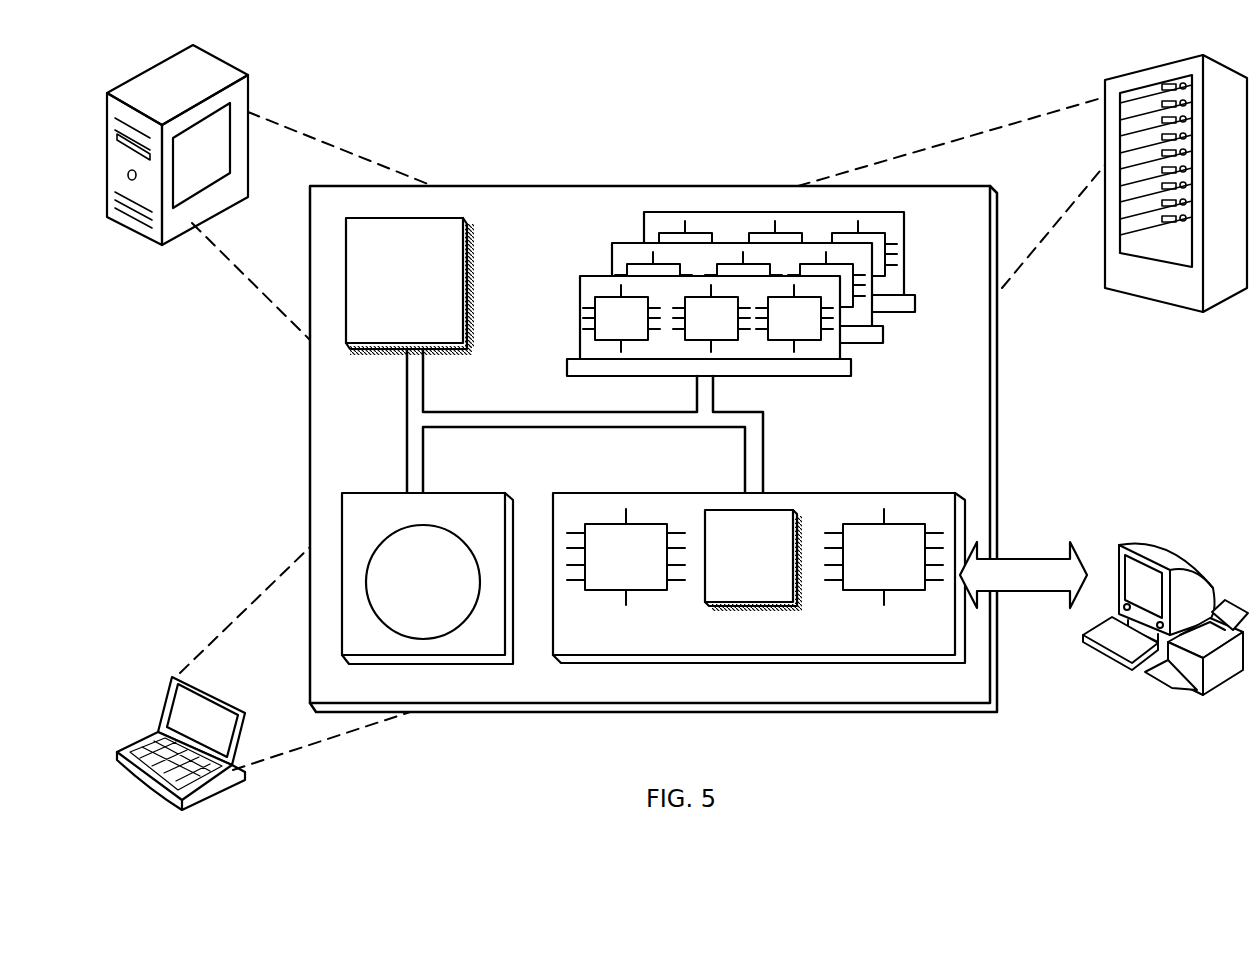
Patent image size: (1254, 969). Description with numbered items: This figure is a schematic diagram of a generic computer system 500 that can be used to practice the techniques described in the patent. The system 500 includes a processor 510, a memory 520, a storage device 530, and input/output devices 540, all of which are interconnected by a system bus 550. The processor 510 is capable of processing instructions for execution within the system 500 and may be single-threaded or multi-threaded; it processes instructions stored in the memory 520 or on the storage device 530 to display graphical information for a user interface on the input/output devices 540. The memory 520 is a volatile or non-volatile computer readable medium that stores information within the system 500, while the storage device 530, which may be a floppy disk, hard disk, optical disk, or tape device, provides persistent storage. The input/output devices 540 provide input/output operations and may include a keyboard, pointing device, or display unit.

The generic computer system 500 is at (487, 70).
The processor 510 is at (455, 334).
The memory 520 is at (907, 338).
The storage device 530 is at (495, 647).
The input/output devices 540 is at (1118, 548).
The system bus 550 is at (586, 428).